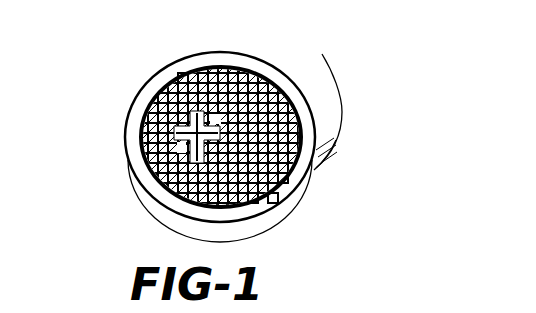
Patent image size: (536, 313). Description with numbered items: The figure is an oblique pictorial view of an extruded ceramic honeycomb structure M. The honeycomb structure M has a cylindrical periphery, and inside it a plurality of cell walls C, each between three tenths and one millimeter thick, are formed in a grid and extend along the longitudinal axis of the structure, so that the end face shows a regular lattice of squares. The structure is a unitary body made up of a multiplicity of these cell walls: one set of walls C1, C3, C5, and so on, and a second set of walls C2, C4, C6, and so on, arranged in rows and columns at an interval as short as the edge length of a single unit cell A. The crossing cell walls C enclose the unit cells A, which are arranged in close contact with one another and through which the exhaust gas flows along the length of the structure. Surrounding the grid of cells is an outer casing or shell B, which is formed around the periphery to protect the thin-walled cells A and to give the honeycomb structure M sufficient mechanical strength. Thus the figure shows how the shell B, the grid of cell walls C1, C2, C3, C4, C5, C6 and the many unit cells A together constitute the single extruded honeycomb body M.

The unit cell A is at (160, 68).
The outer casing or shell B is at (228, 77).
The cell wall C is at (257, 73).
The cell wall C1 is at (180, 76).
The cell wall C2 is at (285, 185).
The cell wall C3 is at (152, 101).
The cell wall C4 is at (276, 210).
The cell wall C5 is at (160, 112).
The cell wall C6 is at (252, 208).
The ceramic honeycomb structure M is at (333, 122).